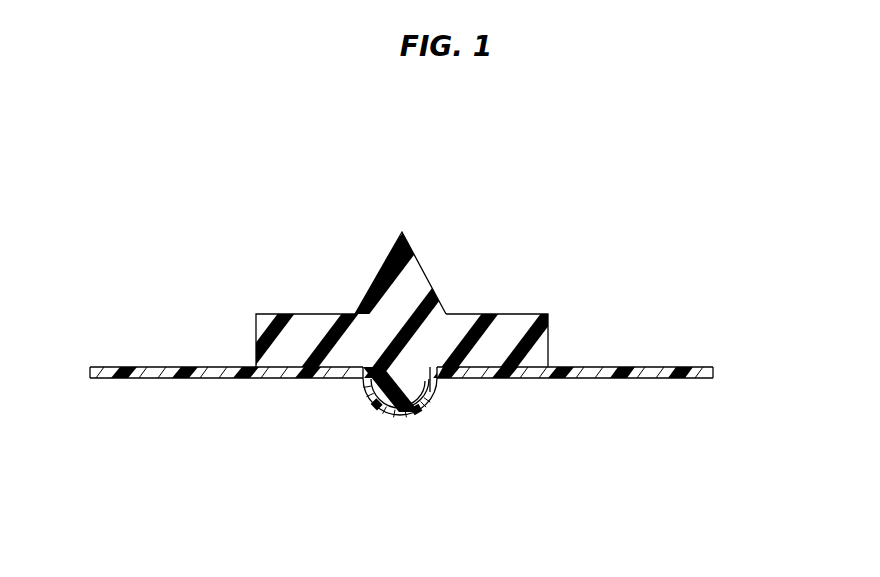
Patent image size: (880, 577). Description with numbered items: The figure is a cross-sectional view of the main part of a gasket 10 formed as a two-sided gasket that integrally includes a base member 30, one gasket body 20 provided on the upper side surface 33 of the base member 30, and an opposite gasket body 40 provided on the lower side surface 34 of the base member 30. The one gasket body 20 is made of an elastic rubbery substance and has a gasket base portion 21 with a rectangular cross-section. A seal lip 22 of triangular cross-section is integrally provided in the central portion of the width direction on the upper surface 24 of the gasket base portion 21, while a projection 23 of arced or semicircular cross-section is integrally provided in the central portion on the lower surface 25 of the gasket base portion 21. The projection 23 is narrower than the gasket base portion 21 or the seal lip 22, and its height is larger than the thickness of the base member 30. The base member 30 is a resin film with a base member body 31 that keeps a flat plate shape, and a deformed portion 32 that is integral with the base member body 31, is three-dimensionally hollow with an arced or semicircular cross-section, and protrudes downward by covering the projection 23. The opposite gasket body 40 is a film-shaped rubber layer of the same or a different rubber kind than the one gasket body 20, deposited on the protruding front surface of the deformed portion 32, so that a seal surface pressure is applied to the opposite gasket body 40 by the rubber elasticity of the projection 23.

The gasket 10 is at (226, 206).
The one gasket body 20 is at (525, 311).
The gasket base portion 21 is at (549, 343).
The seal lip 22 is at (411, 242).
The projection 23 is at (380, 410).
The one side surface of gasket base portion 24 is at (312, 312).
The opposite side surface of gasket base portion 25 is at (478, 379).
The base member 30 is at (102, 364).
The base member body 31 is at (142, 379).
The deformed portion 32 is at (433, 389).
The one side surface of base member 33 is at (688, 366).
The opposite side surface of base member 34 is at (693, 379).
The opposite gasket body 40 is at (404, 419).